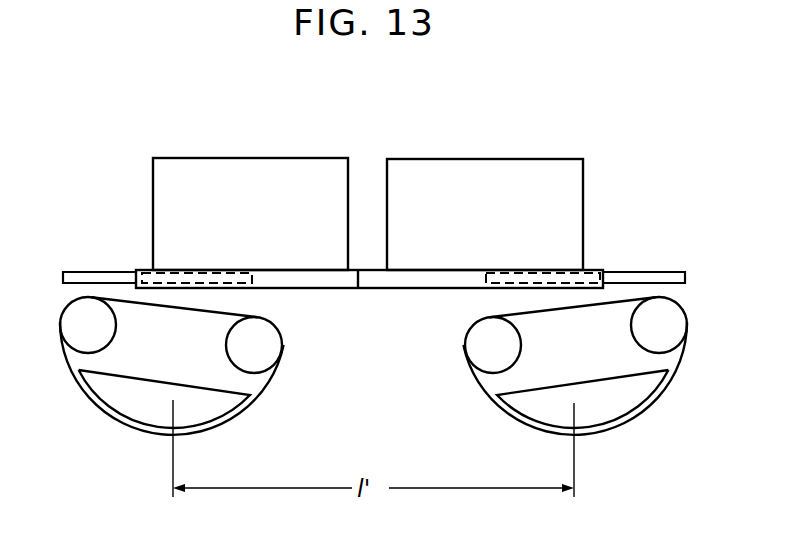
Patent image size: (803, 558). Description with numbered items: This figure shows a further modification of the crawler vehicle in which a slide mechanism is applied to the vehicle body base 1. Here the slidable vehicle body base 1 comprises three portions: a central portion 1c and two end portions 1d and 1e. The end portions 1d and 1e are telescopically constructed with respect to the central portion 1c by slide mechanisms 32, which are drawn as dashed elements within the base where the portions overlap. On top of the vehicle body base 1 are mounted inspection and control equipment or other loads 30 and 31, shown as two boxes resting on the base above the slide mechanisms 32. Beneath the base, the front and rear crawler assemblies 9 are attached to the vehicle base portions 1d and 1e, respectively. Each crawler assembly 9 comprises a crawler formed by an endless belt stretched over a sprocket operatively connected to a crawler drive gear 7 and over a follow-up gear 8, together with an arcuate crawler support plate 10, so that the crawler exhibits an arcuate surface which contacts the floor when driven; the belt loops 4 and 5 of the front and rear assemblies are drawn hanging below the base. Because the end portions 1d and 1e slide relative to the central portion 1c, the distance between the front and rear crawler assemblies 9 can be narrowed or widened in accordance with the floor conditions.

The vehicle body base 1 is at (393, 291).
The central portion 1c is at (358, 283).
The base portion 1d is at (93, 277).
The base portion 1e is at (662, 277).
The belt 4 is at (263, 388).
The belt 5 is at (477, 387).
The crawler drive gear 7 is at (230, 343).
The follow-up gear 8 is at (107, 333).
The crawler assembly 9 is at (282, 318).
The arcuate crawler support plate 10 is at (220, 410).
The load 30 is at (257, 167).
The load 31 is at (484, 165).
The slide mechanism 32 is at (233, 272).